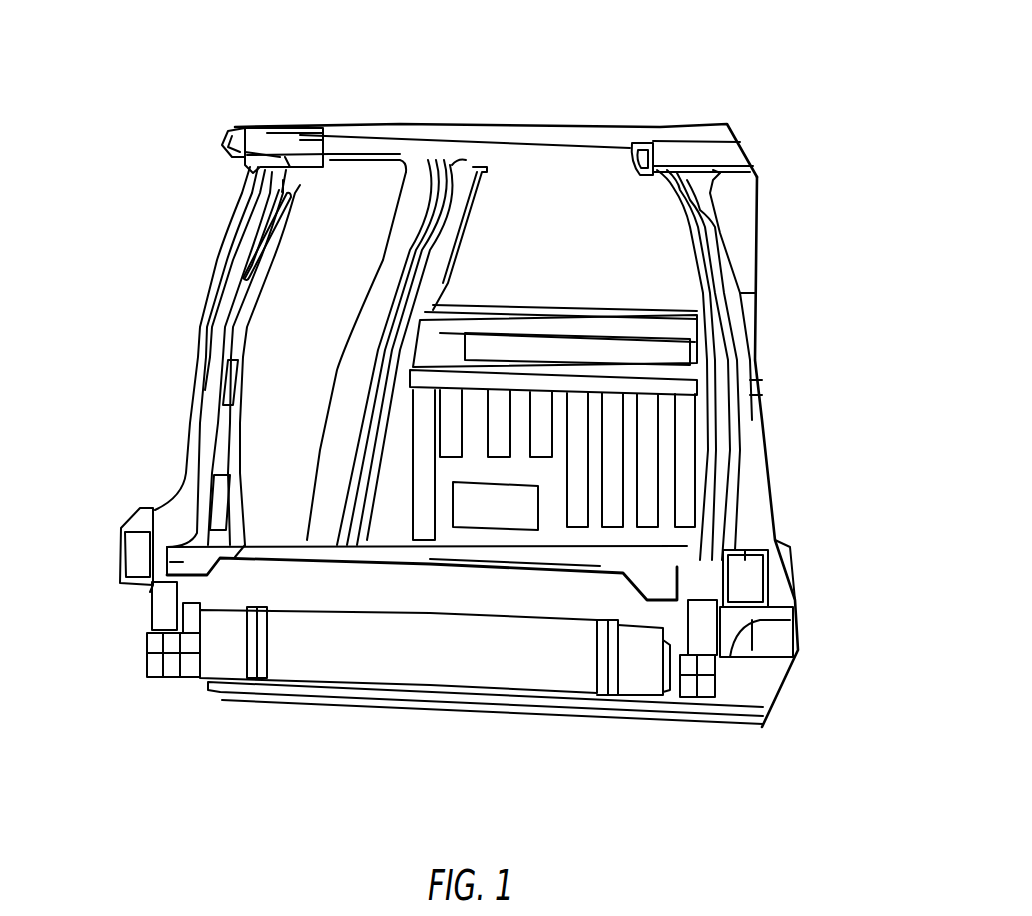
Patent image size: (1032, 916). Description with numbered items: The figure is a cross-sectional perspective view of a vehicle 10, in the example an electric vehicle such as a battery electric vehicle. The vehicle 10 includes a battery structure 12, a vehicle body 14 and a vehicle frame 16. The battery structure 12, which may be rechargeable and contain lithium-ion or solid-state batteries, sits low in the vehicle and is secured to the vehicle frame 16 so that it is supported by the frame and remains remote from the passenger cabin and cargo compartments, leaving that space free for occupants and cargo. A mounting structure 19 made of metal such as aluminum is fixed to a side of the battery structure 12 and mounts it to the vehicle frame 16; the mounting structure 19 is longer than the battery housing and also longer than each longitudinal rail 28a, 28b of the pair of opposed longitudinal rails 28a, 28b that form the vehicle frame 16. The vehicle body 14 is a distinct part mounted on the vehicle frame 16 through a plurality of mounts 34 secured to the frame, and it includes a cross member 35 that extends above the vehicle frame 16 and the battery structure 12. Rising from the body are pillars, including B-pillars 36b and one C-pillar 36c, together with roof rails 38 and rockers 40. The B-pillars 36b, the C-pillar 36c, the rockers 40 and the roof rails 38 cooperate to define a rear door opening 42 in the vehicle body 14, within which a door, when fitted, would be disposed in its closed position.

The vehicle 10 is at (170, 277).
The battery structure 12 is at (314, 688).
The vehicle body 14 is at (764, 362).
The vehicle frame 16 is at (795, 540).
The mounting structure 19 is at (135, 659).
The longitudinal rail 28a is at (163, 588).
The longitudinal rail 28b is at (704, 612).
The mount 34 is at (744, 633).
The cross member 35 is at (295, 556).
The B-pillar 36b is at (253, 223).
The C-pillar 36c is at (448, 220).
The roof rail 38 is at (226, 165).
The rocker 40 is at (117, 546).
The rear door opening 42 is at (294, 326).